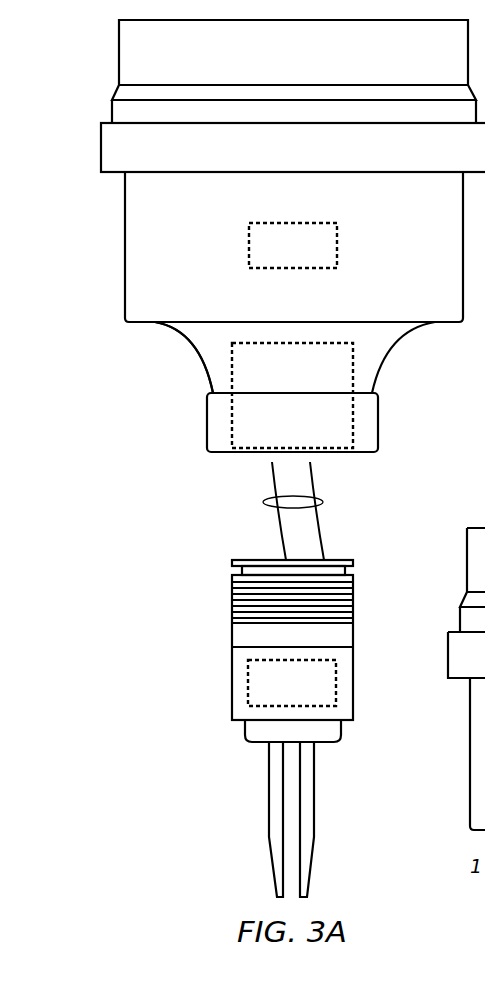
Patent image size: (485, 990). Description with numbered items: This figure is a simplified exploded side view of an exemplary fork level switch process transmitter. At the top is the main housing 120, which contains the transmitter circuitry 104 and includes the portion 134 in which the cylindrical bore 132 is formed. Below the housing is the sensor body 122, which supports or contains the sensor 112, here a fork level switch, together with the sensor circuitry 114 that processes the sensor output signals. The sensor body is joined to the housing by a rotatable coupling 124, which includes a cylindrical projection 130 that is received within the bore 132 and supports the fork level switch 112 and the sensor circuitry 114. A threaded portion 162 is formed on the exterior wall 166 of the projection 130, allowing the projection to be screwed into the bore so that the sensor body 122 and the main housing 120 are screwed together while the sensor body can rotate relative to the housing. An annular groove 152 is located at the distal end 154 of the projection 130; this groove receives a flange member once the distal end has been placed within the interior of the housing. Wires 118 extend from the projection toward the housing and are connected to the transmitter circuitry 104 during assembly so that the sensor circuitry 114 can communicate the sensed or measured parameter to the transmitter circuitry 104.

The main housing 120 is at (137, 233).
The transmitter circuitry 104 is at (333, 243).
The portion having the bore 134 is at (197, 343).
The cylindrical bore 132 is at (336, 377).
The wires 118 is at (266, 500).
The distal end 154 is at (245, 560).
The groove 152 is at (238, 570).
The threaded portion 162 is at (238, 604).
The exterior wall 166 is at (235, 633).
The cylindrical projection 130 is at (347, 637).
The sensor circuitry 114 is at (254, 690).
The sensor body 122 is at (347, 712).
The sensor 112 is at (246, 853).
The rotatable coupling 124 is at (150, 670).